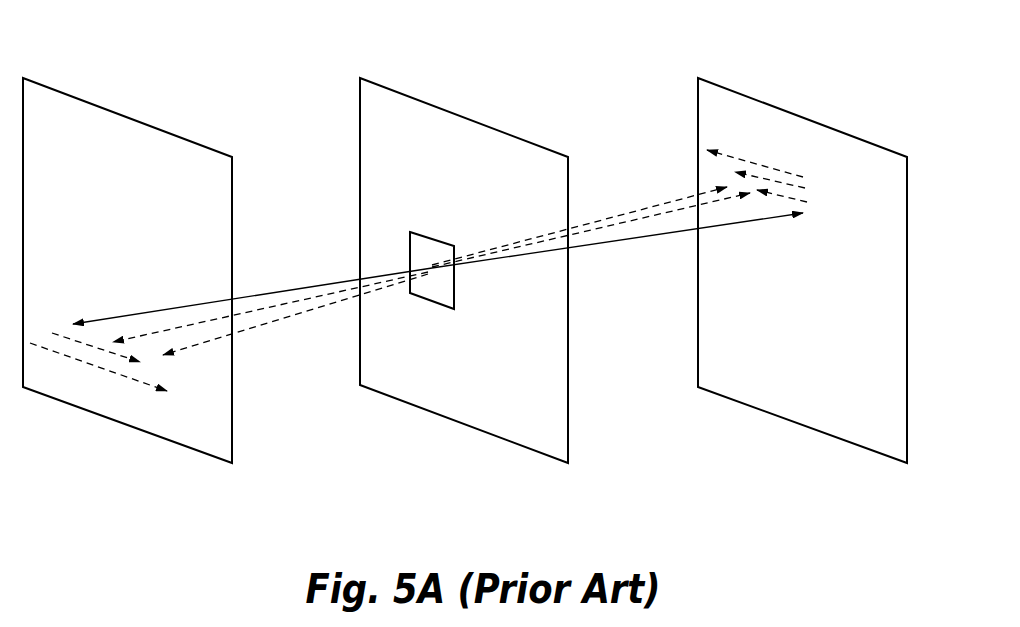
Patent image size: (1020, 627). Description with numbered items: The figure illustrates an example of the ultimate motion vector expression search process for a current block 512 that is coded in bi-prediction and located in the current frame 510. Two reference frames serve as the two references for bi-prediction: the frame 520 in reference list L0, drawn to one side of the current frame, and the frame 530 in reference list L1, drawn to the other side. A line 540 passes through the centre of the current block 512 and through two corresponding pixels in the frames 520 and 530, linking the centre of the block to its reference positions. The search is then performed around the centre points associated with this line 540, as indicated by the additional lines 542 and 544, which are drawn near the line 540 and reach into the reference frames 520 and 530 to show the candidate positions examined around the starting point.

The current frame 510 is at (520, 447).
The current block 512 is at (433, 302).
The reference frame in list L0 520 is at (172, 441).
The reference frame in list L1 530 is at (860, 447).
The line through the centre of the current block 540 is at (596, 240).
The search line 542 is at (637, 220).
The search line 544 is at (625, 212).